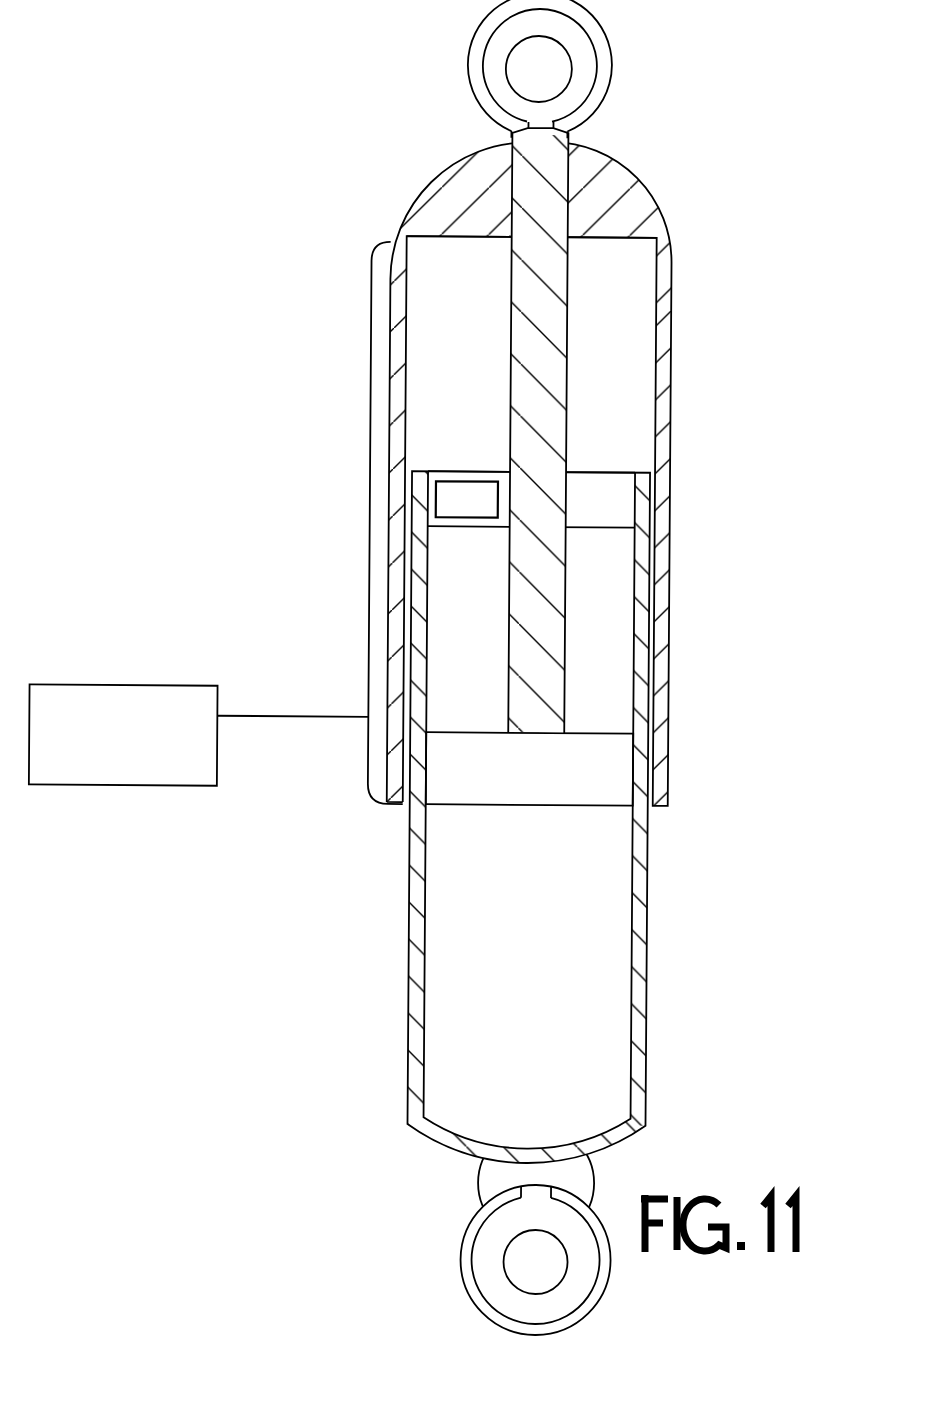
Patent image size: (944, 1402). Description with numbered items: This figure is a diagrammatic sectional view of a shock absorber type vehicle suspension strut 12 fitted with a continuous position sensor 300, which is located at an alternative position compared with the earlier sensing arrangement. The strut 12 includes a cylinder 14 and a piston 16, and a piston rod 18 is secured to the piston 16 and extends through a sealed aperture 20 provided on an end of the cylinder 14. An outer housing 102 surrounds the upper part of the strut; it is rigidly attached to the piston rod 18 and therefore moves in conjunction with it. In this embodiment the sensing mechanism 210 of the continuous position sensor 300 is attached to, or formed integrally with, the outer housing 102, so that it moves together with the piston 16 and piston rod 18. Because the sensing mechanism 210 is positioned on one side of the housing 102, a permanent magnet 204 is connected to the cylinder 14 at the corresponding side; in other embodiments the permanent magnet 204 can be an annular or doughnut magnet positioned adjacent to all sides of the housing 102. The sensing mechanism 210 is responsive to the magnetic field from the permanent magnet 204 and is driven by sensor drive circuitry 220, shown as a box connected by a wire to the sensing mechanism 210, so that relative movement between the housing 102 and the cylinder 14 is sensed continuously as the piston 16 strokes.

The vehicle suspension strut 12 is at (571, 444).
The cylinder 14 is at (650, 823).
The piston 16 is at (595, 750).
The piston rod 18 is at (542, 607).
The sealed aperture 20 is at (597, 472).
The outer housing 102 is at (456, 163).
The permanent magnet 204 is at (436, 503).
The sensing mechanism 210 is at (372, 256).
The sensor drive circuitry 220 is at (199, 788).
The continuous position sensor 300 is at (434, 378).